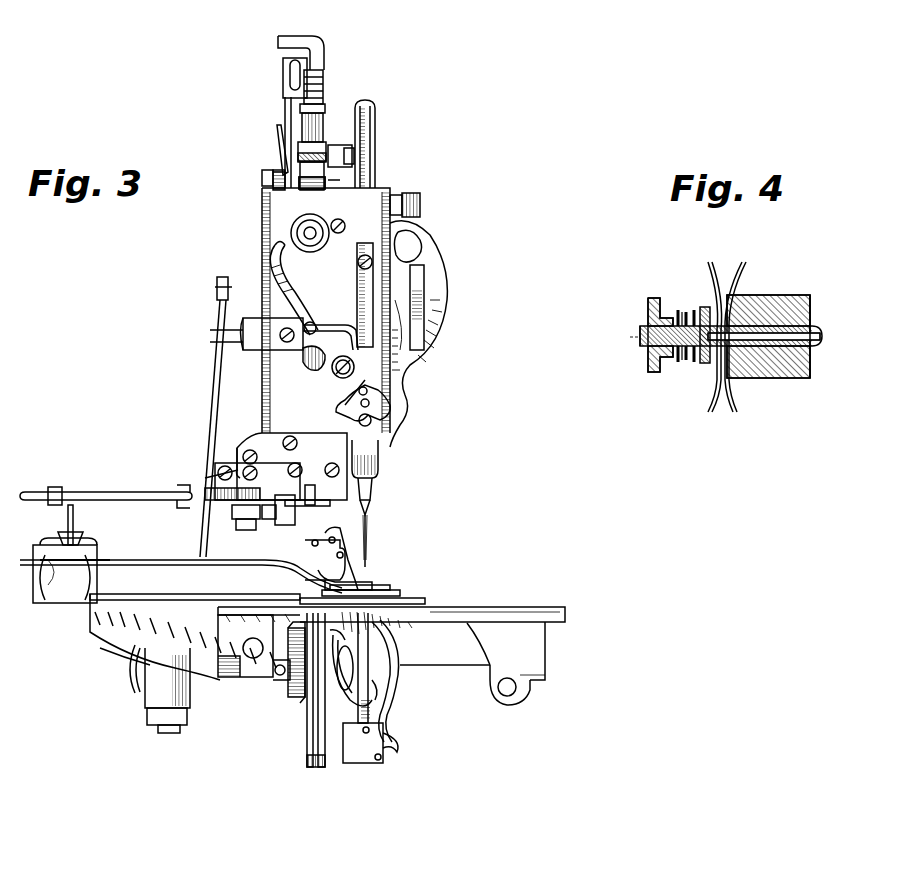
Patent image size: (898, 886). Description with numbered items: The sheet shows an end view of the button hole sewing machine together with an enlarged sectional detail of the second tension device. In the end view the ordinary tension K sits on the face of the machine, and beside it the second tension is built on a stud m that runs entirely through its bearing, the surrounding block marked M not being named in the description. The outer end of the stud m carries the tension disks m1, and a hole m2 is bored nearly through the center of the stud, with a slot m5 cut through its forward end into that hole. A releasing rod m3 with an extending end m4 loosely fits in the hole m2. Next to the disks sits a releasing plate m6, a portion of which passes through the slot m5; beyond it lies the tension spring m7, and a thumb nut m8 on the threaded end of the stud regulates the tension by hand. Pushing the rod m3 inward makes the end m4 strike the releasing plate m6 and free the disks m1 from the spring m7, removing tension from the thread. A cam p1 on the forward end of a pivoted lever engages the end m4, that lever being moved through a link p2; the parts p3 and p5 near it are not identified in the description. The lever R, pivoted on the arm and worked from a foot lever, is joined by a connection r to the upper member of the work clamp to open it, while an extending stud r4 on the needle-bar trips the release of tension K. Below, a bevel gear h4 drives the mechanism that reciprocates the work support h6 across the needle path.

In FIG. 3, the tension disks m1 is at (275, 140).
In FIG. 4, the tension disks m1 is at (708, 258).
In FIG. 3, the hole m2 is at (277, 170).
In FIG. 4, the hole m2 is at (688, 318).
In FIG. 3, the stud m is at (268, 177).
In FIG. 4, the stud m is at (812, 325).
In FIG. 3, the slot m5 is at (262, 178).
In FIG. 4, the slot m5 is at (630, 337).
In FIG. 3, the block M is at (297, 198).
In FIG. 4, the block M is at (768, 320).
In FIG. 3, the extending end m4 is at (328, 195).
In FIG. 4, the extending end m4 is at (822, 339).
In FIG. 4, the releasing rod m3 is at (812, 362).
In FIG. 4, the releasing plate m6 is at (704, 306).
In FIG. 4, the tension spring m7 is at (690, 362).
In FIG. 4, the thumb nut m8 is at (655, 367).
In FIG. 3, the cam p1 is at (296, 296).
In FIG. 3, the tension K is at (328, 232).
In FIG. 3, the extending stud r4 is at (372, 265).
In FIG. 3, the bar p3 is at (333, 322).
In FIG. 3, the lever R is at (243, 330).
In FIG. 3, the screw p5 is at (287, 343).
In FIG. 3, the link p2 is at (355, 364).
In FIG. 3, the connection r is at (207, 425).
In FIG. 3, the work support h6 is at (152, 560).
In FIG. 3, the bevel gear h4 is at (292, 692).